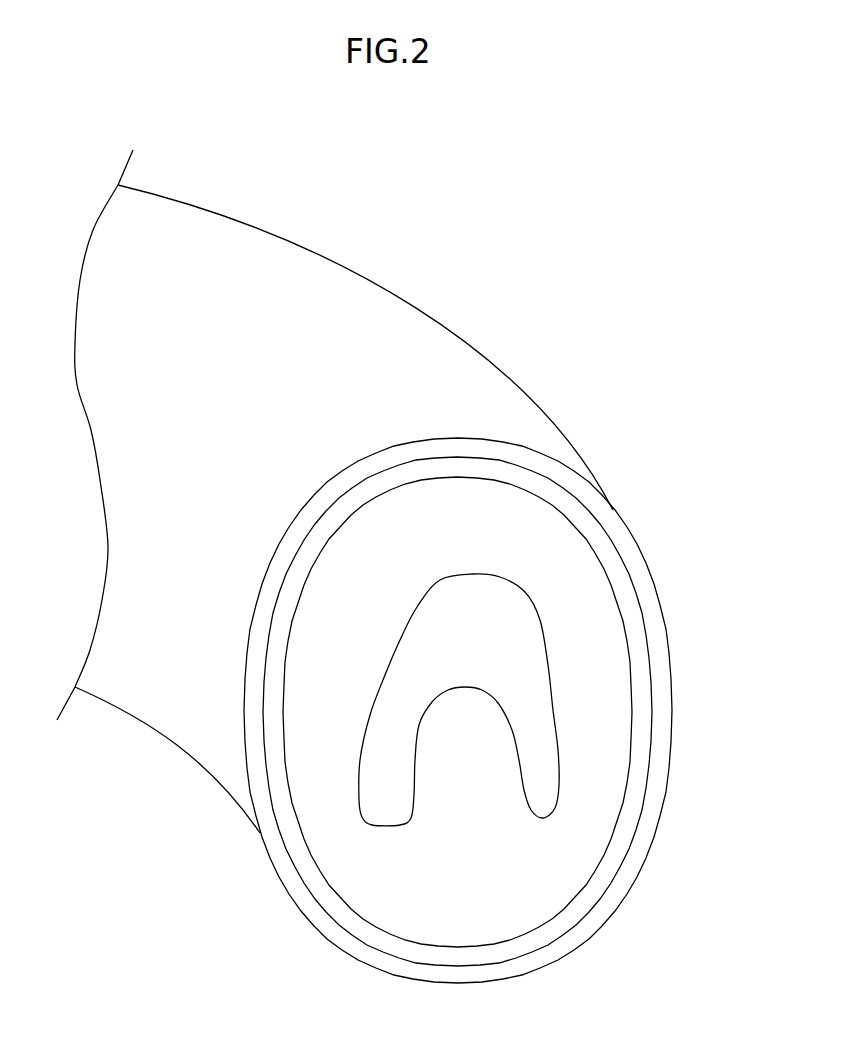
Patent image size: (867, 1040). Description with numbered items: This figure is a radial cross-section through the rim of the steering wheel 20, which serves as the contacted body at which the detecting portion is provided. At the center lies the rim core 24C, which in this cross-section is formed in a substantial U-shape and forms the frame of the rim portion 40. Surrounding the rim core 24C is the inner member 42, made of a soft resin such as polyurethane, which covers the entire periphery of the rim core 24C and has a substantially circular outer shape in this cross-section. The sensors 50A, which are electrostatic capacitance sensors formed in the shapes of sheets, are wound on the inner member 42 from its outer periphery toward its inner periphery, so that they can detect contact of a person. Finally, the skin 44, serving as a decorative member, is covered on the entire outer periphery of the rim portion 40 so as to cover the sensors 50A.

The steering wheel 20 is at (492, 233).
The rim portion 40 is at (498, 372).
The skin 44 is at (640, 583).
The electrostatic capacitance sensors 50A is at (637, 647).
The inner member 42 is at (598, 693).
The rim core 24C is at (535, 742).